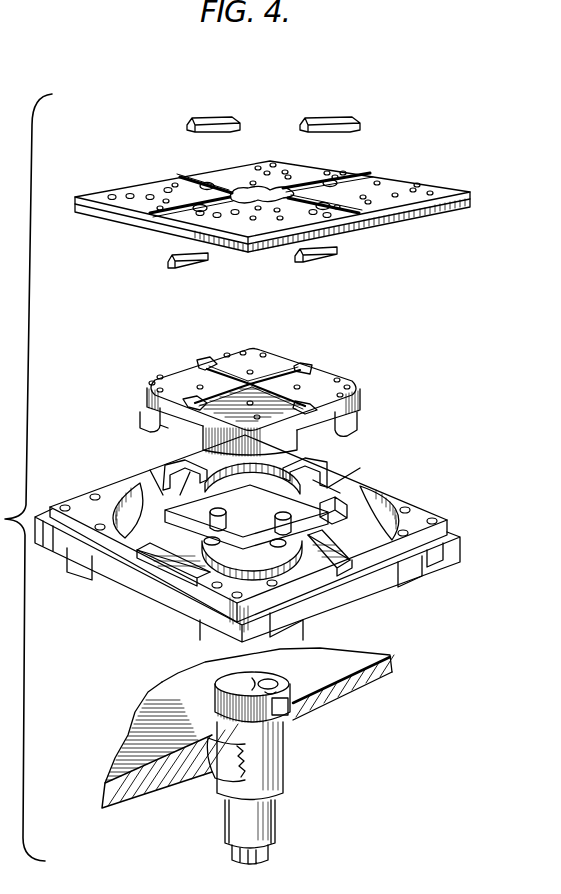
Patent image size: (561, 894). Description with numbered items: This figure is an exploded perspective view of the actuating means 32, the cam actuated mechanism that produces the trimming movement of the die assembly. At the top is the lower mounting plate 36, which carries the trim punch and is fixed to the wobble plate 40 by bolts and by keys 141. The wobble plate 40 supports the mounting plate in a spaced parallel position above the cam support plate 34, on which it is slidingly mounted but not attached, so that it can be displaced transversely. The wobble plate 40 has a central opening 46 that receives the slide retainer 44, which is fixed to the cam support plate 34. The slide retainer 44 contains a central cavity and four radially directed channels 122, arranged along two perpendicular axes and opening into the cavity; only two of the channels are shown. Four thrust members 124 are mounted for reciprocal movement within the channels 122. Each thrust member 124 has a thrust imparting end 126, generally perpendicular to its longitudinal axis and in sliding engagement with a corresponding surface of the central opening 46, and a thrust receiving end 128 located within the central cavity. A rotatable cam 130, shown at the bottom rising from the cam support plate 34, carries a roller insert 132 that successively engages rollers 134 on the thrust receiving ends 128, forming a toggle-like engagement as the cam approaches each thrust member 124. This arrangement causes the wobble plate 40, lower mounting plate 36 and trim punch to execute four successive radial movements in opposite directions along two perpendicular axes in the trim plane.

The actuating means 32 is at (448, 283).
The cam support plate 34 is at (376, 681).
The lower mounting plate 36 is at (399, 182).
The wobble plate 40 is at (414, 514).
The slide retainer 44 is at (325, 378).
The central opening 46 is at (300, 470).
The radially directed channels 122 is at (160, 430).
The thrust members 124 is at (300, 482).
The thrust imparting end 126 is at (188, 468).
The thrust receiving end 128 is at (274, 542).
The rotatable cam 130 is at (223, 676).
The roller insert 132 is at (278, 680).
The rollers 134 is at (227, 530).
The keys 141 is at (295, 263).